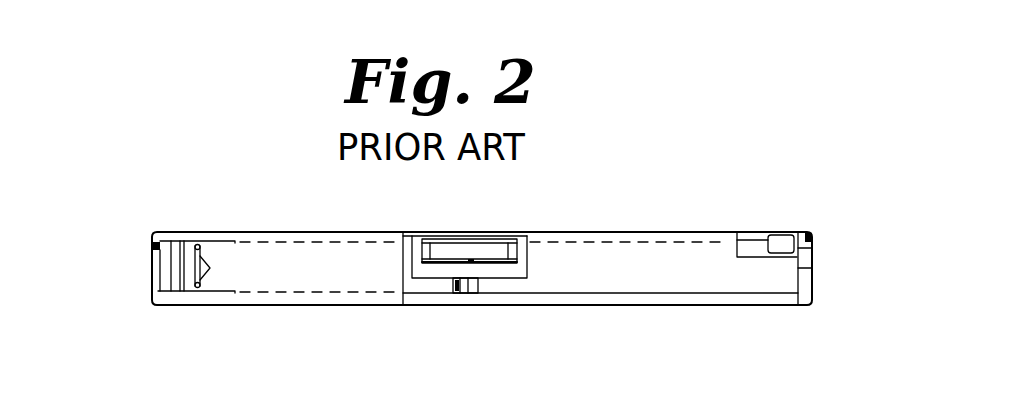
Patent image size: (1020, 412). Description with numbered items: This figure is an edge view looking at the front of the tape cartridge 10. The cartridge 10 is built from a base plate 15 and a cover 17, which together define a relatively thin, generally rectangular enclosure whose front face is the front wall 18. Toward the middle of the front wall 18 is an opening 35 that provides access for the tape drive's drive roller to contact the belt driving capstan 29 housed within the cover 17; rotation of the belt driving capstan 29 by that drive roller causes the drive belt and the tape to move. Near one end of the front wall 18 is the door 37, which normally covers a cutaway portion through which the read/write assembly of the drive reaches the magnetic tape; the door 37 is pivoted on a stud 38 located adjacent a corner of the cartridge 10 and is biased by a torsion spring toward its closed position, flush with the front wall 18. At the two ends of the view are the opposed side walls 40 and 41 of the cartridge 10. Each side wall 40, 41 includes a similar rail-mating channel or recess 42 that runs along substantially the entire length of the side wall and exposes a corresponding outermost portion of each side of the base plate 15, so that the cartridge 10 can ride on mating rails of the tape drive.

The tape cartridge 10 is at (737, 198).
The base plate 15 is at (793, 300).
The cover 17 is at (673, 232).
The front wall 18 is at (748, 278).
The belt driving capstan 29 is at (478, 260).
The opening 35 is at (458, 270).
The door 37 is at (327, 263).
The stud 38 is at (182, 250).
The side wall 40 is at (153, 271).
The side wall 41 is at (813, 263).
The rail-mating channel or recess 42 is at (156, 283).